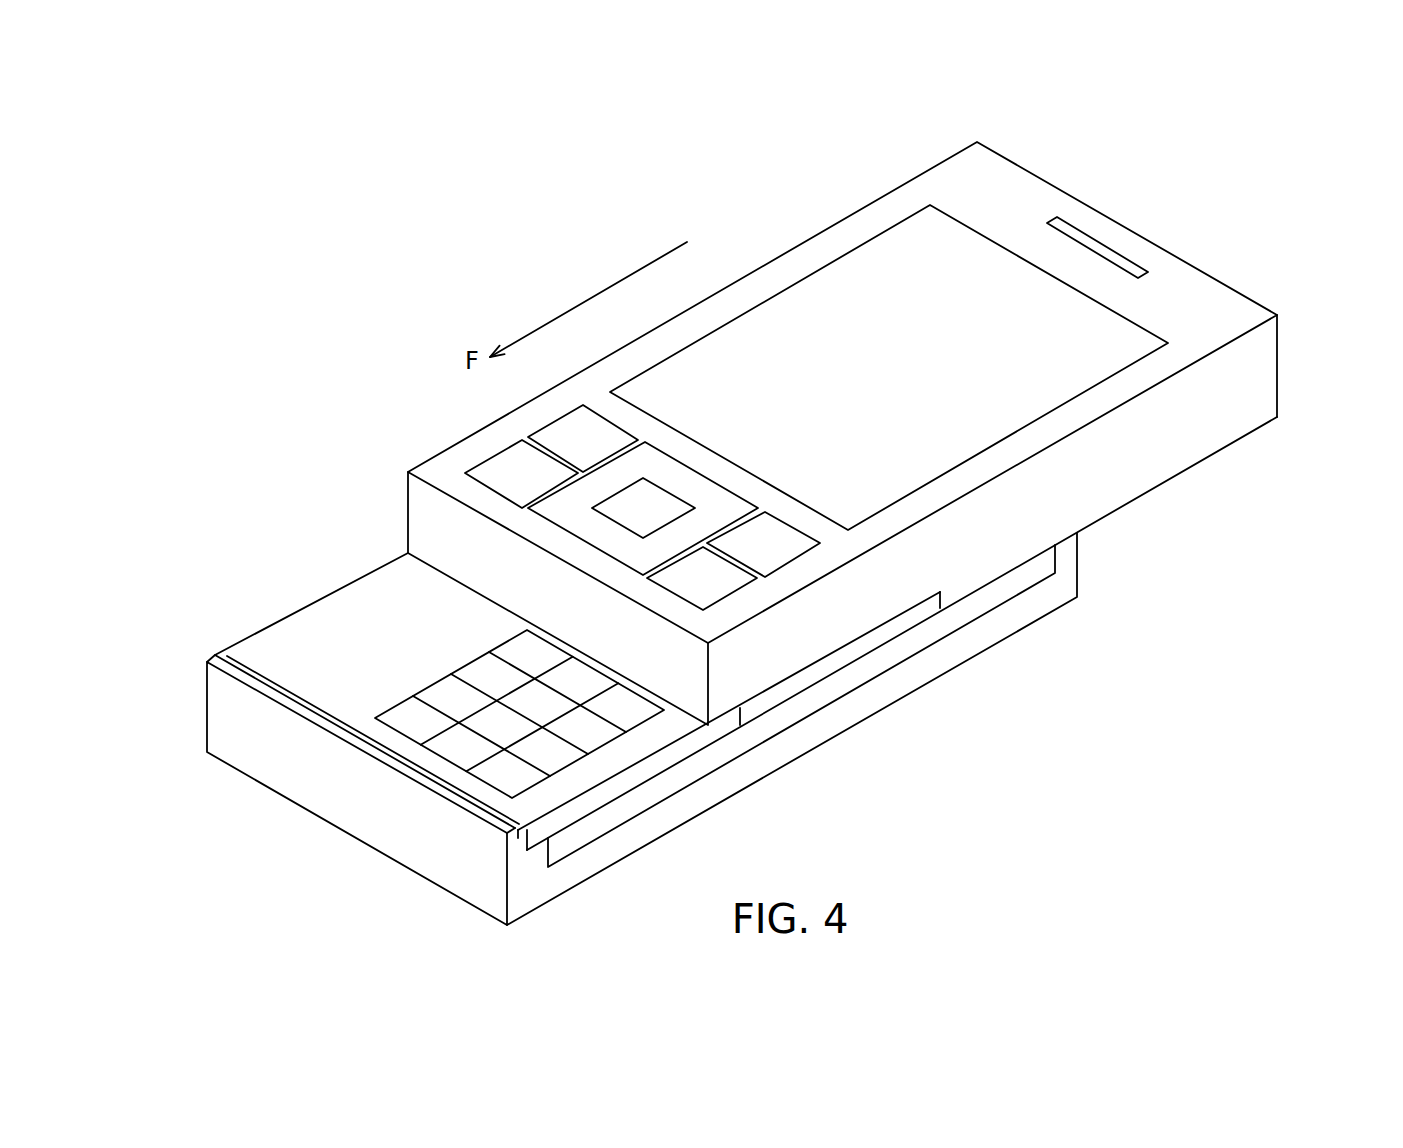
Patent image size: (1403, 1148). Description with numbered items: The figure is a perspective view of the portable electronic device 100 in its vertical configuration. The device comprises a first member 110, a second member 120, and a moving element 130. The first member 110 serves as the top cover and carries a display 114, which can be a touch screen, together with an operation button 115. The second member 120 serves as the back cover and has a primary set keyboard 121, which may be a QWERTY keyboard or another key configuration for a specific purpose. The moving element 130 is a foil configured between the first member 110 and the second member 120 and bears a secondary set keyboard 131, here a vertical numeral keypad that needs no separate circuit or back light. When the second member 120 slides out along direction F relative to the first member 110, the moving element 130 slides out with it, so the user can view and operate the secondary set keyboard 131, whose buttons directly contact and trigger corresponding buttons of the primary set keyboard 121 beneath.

The portable electronic device 100 is at (1260, 165).
The first member 110 is at (1188, 264).
The display 114 is at (778, 292).
The operation button 115 is at (541, 428).
The second member 120 is at (1037, 622).
The primary set keyboard 121 is at (853, 680).
The moving element 130 is at (308, 624).
The secondary set keyboard 131 is at (573, 755).